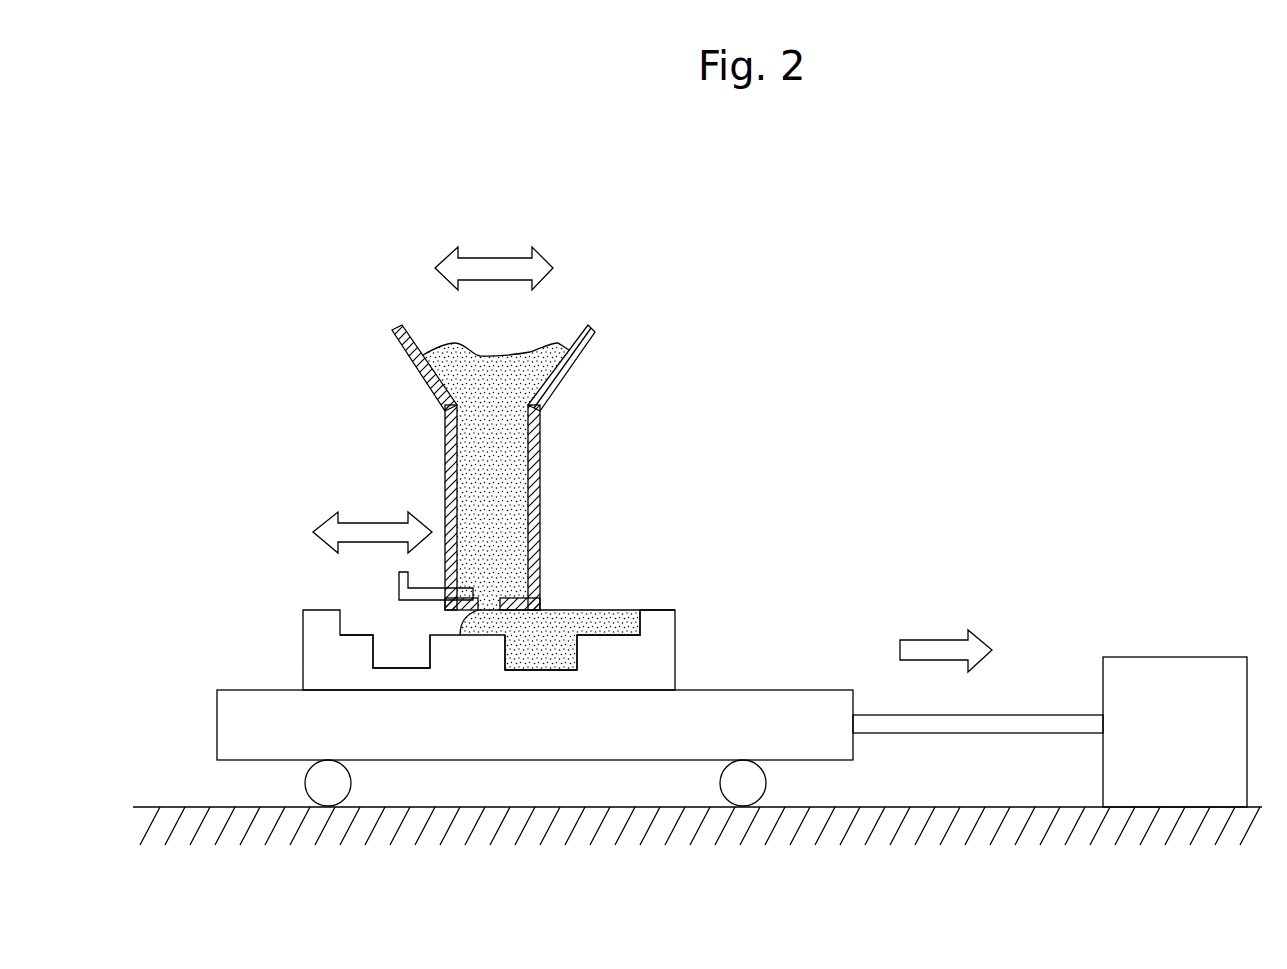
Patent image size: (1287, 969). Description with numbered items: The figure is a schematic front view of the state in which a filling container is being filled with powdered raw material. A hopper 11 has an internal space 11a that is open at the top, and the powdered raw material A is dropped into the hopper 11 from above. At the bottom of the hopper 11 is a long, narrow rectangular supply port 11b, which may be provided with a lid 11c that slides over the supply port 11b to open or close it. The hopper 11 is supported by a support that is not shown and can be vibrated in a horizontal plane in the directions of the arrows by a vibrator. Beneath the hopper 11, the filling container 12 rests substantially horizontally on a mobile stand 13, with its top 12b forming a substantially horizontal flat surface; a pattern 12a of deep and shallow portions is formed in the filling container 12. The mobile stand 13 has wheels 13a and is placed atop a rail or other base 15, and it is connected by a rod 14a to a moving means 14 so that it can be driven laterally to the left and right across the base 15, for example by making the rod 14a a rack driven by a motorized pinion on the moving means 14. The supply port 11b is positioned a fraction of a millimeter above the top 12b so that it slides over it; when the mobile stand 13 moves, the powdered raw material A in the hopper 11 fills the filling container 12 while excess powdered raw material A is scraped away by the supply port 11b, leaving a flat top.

The hopper 11 is at (517, 467).
The internal space 11a is at (520, 467).
The supply port 11b is at (522, 600).
The lid 11c is at (398, 590).
The powdered raw material A is at (505, 441).
The filling container 12 is at (468, 619).
The pattern 12a is at (360, 635).
The top 12b is at (657, 610).
The mobile stand 13 is at (742, 690).
The wheels 13a is at (328, 797).
The moving means 14 is at (1175, 657).
The rod 14a is at (1026, 715).
The base 15 is at (892, 807).